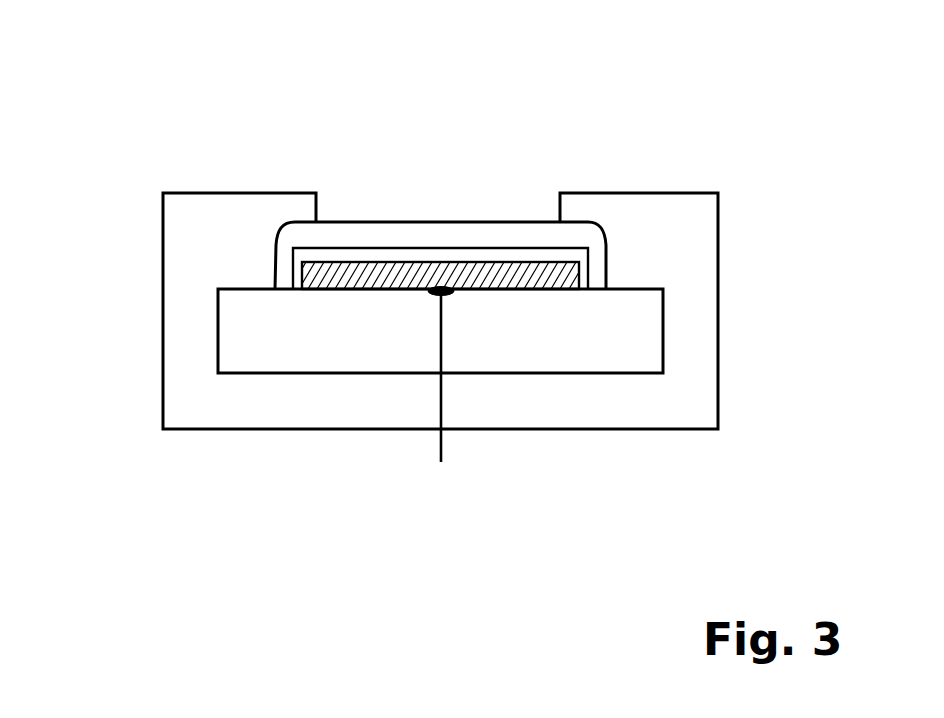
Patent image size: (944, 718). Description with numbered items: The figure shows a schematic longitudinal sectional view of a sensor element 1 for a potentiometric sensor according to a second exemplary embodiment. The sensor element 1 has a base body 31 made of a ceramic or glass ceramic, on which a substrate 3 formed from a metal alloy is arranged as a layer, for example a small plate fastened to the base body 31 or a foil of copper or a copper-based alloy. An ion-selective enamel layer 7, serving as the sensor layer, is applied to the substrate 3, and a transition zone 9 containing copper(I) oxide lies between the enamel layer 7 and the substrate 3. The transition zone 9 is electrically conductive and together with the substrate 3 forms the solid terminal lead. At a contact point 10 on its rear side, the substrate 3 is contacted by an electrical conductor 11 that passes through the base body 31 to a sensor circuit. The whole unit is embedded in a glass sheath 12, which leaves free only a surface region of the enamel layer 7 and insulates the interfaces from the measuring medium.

The sensor element 1 is at (618, 118).
The substrate 3 is at (330, 273).
The ion-selective enamel layer 7 is at (597, 257).
The transition zone 9 is at (583, 280).
The contact point 10 is at (453, 295).
The electrical conductor 11 is at (442, 450).
The glass sheath 12 is at (190, 247).
The base body 31 is at (372, 343).